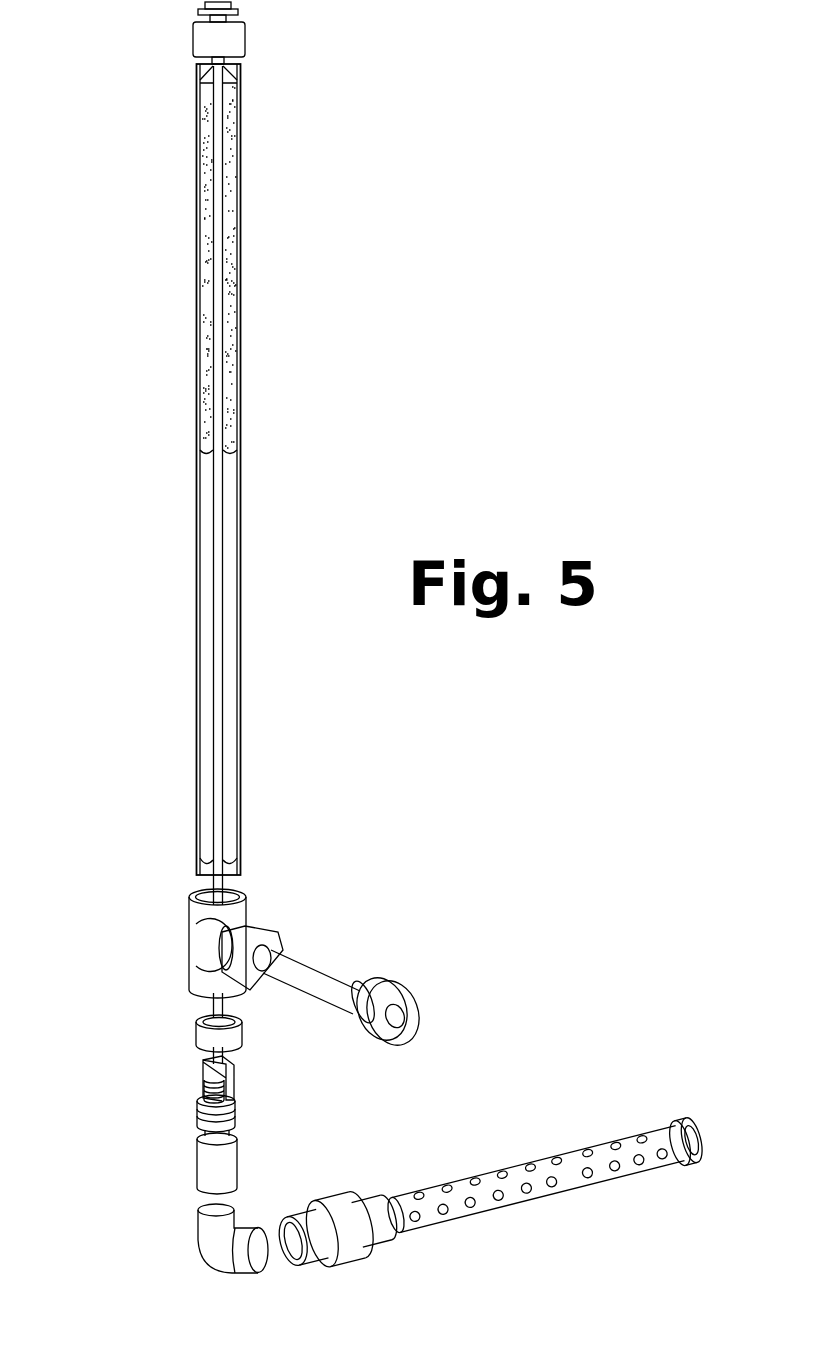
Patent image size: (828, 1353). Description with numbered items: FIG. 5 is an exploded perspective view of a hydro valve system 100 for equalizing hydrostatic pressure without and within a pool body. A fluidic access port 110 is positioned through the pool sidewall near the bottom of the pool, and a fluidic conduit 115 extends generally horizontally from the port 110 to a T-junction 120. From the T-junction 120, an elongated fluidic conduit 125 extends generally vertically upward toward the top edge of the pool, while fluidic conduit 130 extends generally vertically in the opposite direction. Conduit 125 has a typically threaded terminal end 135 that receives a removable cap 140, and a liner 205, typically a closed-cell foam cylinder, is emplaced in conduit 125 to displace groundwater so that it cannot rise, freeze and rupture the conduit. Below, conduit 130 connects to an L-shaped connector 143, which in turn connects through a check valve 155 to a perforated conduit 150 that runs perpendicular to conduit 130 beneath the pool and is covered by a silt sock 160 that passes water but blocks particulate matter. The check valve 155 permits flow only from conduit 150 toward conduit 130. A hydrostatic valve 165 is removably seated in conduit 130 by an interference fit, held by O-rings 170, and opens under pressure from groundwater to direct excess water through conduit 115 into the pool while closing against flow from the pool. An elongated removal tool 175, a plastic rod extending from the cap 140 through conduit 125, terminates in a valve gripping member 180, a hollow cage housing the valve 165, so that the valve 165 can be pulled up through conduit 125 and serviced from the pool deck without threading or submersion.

The hydro valve system 100 is at (112, 702).
The cap 140 is at (246, 35).
The terminal end 135 is at (243, 83).
The liner 205 is at (228, 277).
The fluidic conduit 125 is at (241, 558).
The removal tool 175 is at (217, 527).
The T-junction 120 is at (192, 922).
The fluidic conduit 115 is at (337, 977).
The fluidic access port 110 is at (420, 997).
The valve gripping member 180 is at (235, 1078).
The hydrostatic valve 165 is at (203, 1085).
The O-rings 170 is at (200, 1118).
The fluidic conduit 130 is at (238, 1163).
The L-shaped connector 143 is at (200, 1262).
The check valve 155 is at (357, 1258).
The conduit 150 is at (450, 1222).
The silt sock 160 is at (606, 1187).